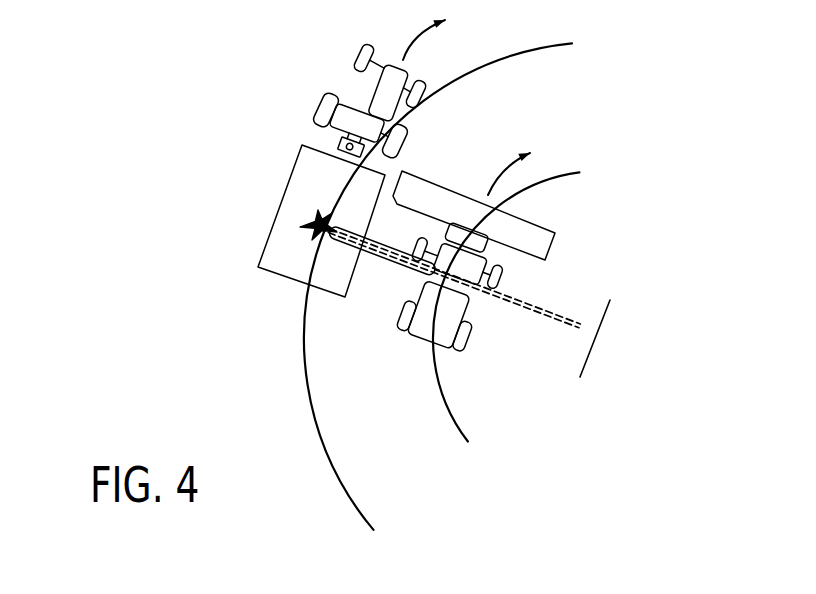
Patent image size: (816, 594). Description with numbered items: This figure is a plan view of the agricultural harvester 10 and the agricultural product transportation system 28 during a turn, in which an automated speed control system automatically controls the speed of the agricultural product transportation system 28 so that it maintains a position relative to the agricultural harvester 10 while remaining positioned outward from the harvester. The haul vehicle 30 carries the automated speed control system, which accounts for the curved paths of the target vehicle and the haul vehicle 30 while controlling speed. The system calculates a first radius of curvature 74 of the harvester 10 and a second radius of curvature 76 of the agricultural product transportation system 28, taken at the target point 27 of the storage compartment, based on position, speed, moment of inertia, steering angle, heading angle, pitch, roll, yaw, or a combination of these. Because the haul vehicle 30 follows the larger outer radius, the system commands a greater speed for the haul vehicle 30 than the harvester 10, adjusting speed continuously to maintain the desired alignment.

The agricultural harvester 10 is at (503, 344).
The target point 27 is at (303, 227).
The agricultural product transportation system 28 is at (282, 130).
The haul vehicle 30 is at (372, 83).
The first radius of curvature 74 is at (576, 330).
The second radius of curvature 76 is at (566, 315).